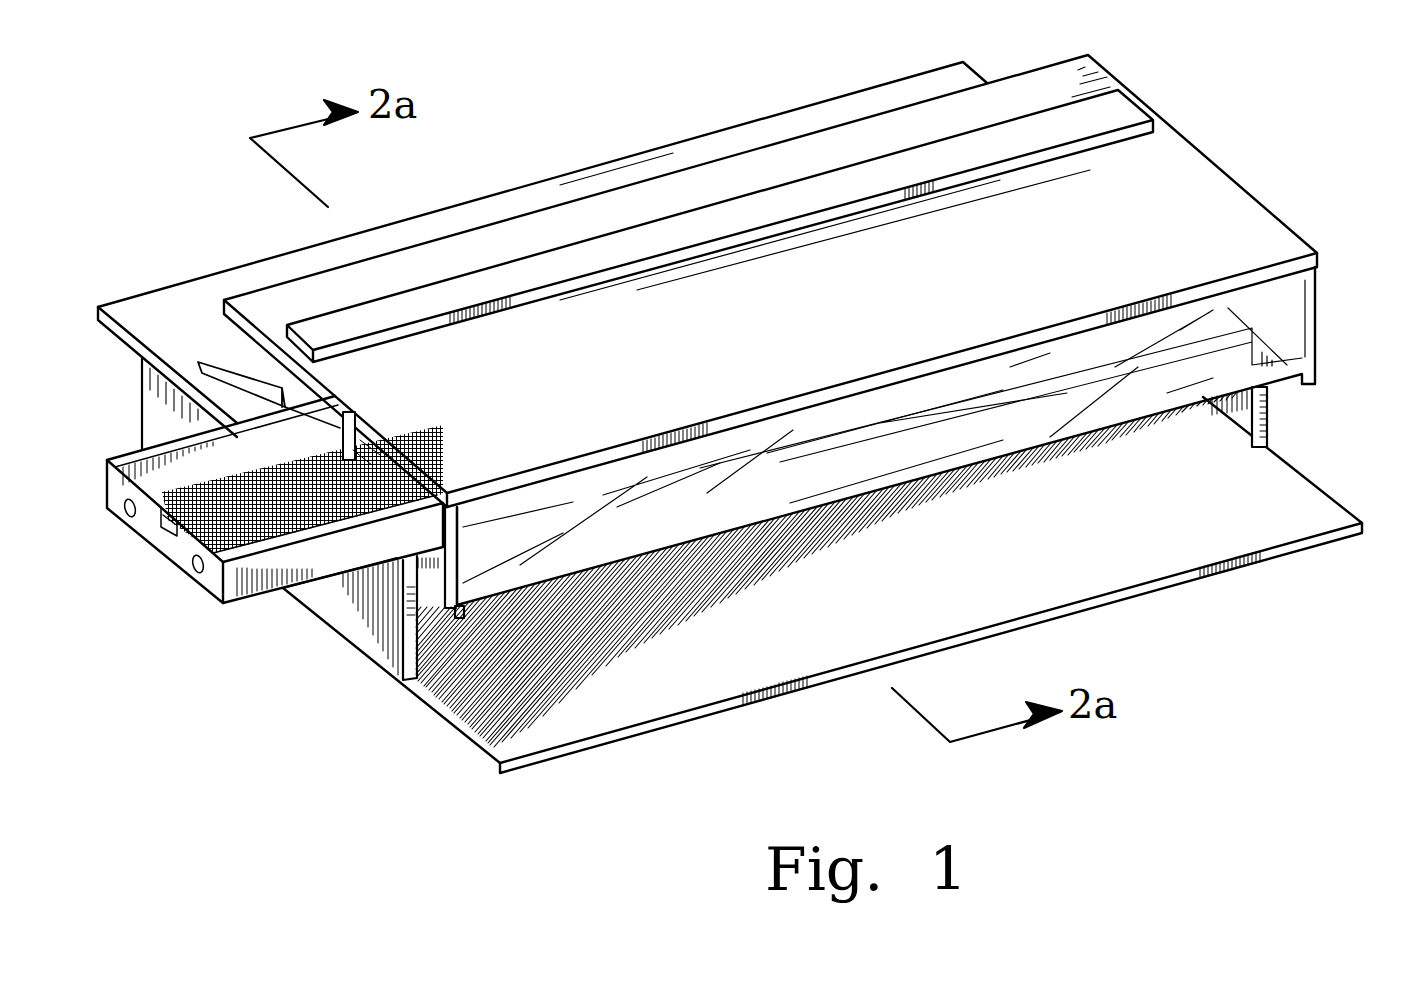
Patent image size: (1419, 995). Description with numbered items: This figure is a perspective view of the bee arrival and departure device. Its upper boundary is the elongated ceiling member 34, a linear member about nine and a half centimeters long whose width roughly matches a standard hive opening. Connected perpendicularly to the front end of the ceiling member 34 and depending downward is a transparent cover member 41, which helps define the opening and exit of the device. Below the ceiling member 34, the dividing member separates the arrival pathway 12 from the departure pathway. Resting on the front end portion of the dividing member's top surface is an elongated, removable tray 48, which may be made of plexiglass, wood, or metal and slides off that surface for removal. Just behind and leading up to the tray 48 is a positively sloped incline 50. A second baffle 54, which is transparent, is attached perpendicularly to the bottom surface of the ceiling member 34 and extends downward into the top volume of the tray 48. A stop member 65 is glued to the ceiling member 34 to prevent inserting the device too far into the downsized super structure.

The arrival pathway 12 is at (1295, 507).
The elongated ceiling member 34 is at (1233, 227).
The transparent cover member 41 is at (1278, 326).
The removable tray 48 is at (147, 520).
The positively sloped incline 50 is at (245, 362).
The second baffle 54 is at (345, 427).
The stop member 65 is at (1042, 127).